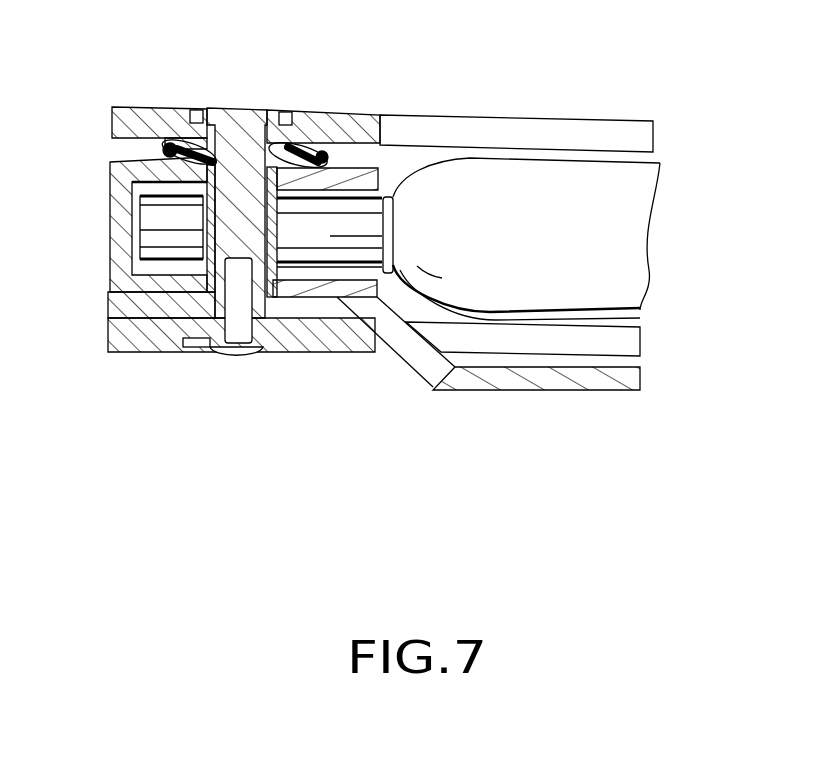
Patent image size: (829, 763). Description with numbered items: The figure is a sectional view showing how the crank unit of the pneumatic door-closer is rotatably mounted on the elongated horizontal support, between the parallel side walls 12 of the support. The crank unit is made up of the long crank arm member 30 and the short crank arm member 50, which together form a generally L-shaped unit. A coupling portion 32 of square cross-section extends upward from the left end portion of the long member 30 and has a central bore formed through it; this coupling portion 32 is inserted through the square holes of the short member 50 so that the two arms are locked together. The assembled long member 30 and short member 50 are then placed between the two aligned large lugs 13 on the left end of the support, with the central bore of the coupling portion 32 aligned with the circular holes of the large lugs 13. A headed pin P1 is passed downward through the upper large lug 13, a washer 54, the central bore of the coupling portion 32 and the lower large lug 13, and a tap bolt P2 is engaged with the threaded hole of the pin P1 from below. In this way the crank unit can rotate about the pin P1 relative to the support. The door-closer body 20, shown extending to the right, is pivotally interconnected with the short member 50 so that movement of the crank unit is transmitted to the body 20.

The side wall 12 is at (618, 138).
The large lug 13 is at (158, 110).
The door-closer body 20 is at (617, 252).
The long crank arm member 30 is at (200, 297).
The coupling portion 32 is at (200, 234).
The short crank arm member 50 is at (110, 180).
The washer 54 is at (172, 150).
The headed pin P1 is at (247, 112).
The tap bolt P2 is at (222, 352).